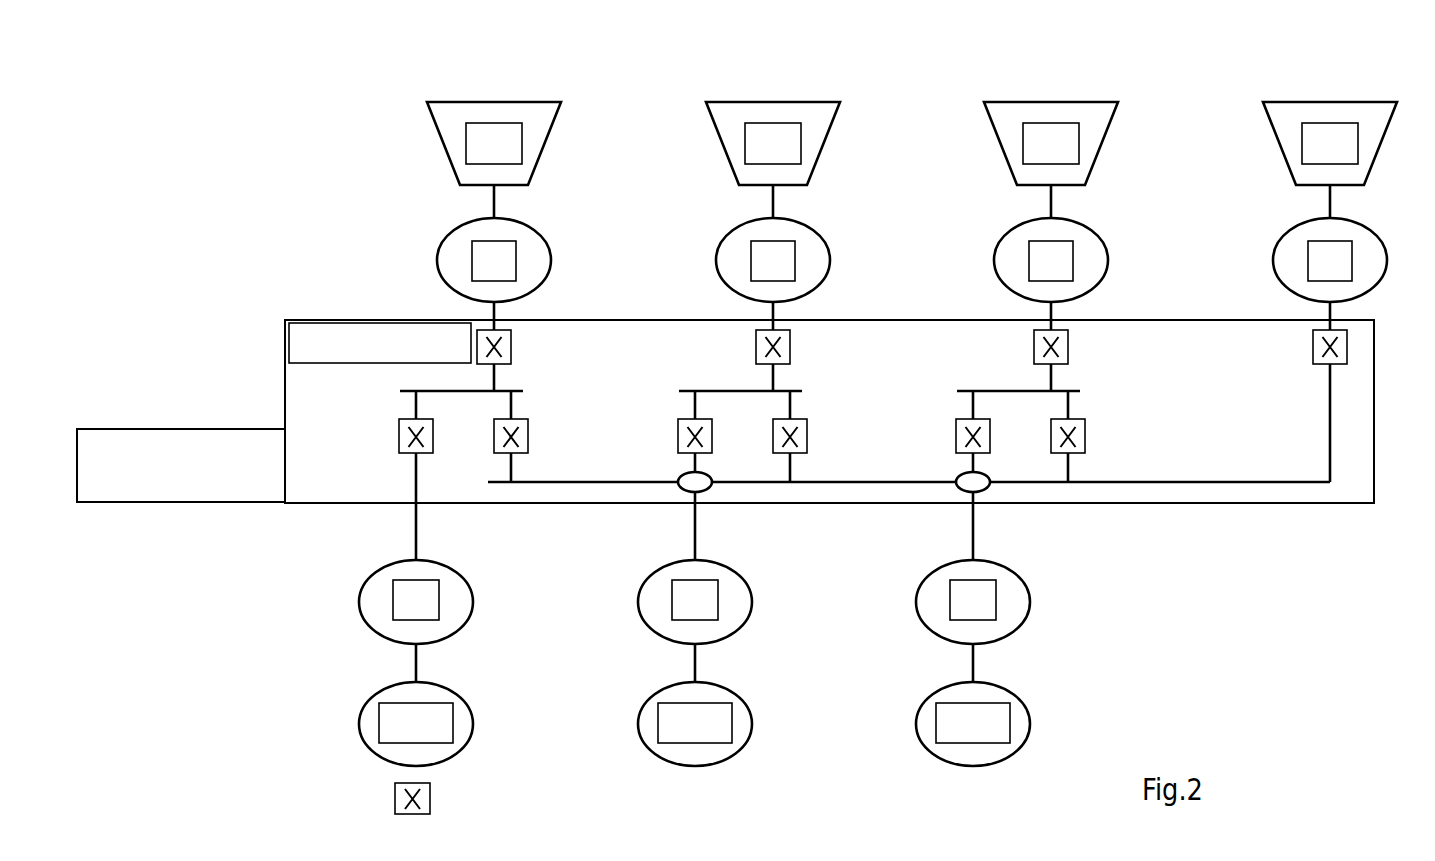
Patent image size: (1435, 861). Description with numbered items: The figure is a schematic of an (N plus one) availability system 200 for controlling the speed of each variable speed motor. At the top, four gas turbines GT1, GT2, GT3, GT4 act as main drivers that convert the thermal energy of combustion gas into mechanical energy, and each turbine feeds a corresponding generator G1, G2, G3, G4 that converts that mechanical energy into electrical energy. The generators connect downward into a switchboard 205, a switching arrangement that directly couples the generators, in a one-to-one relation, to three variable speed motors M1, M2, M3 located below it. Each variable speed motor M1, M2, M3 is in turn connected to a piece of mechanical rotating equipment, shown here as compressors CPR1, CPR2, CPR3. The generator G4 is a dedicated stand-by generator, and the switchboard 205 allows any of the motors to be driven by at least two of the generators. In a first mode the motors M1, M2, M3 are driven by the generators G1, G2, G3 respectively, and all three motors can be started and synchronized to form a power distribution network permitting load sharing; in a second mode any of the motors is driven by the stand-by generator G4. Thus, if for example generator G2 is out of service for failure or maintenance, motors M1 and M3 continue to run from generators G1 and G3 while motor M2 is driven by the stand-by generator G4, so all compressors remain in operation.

The (N+1) availability system 200 is at (751, 438).
The switchboard 205 is at (829, 431).
The gas turbine GT1 is at (494, 143).
The gas turbine GT2 is at (773, 143).
The gas turbine GT3 is at (1051, 143).
The gas turbine GT4 is at (1330, 143).
The generator G1 is at (494, 243).
The generator G2 is at (773, 243).
The generator G3 is at (1051, 243).
The dedicated stand-by generator G4 is at (1330, 243).
The variable speed motor M1 is at (416, 602).
The variable speed motor M2 is at (695, 602).
The variable speed motor M3 is at (973, 602).
The compressor CPR1 is at (416, 705).
The compressor CPR2 is at (695, 705).
The compressor CPR3 is at (973, 705).